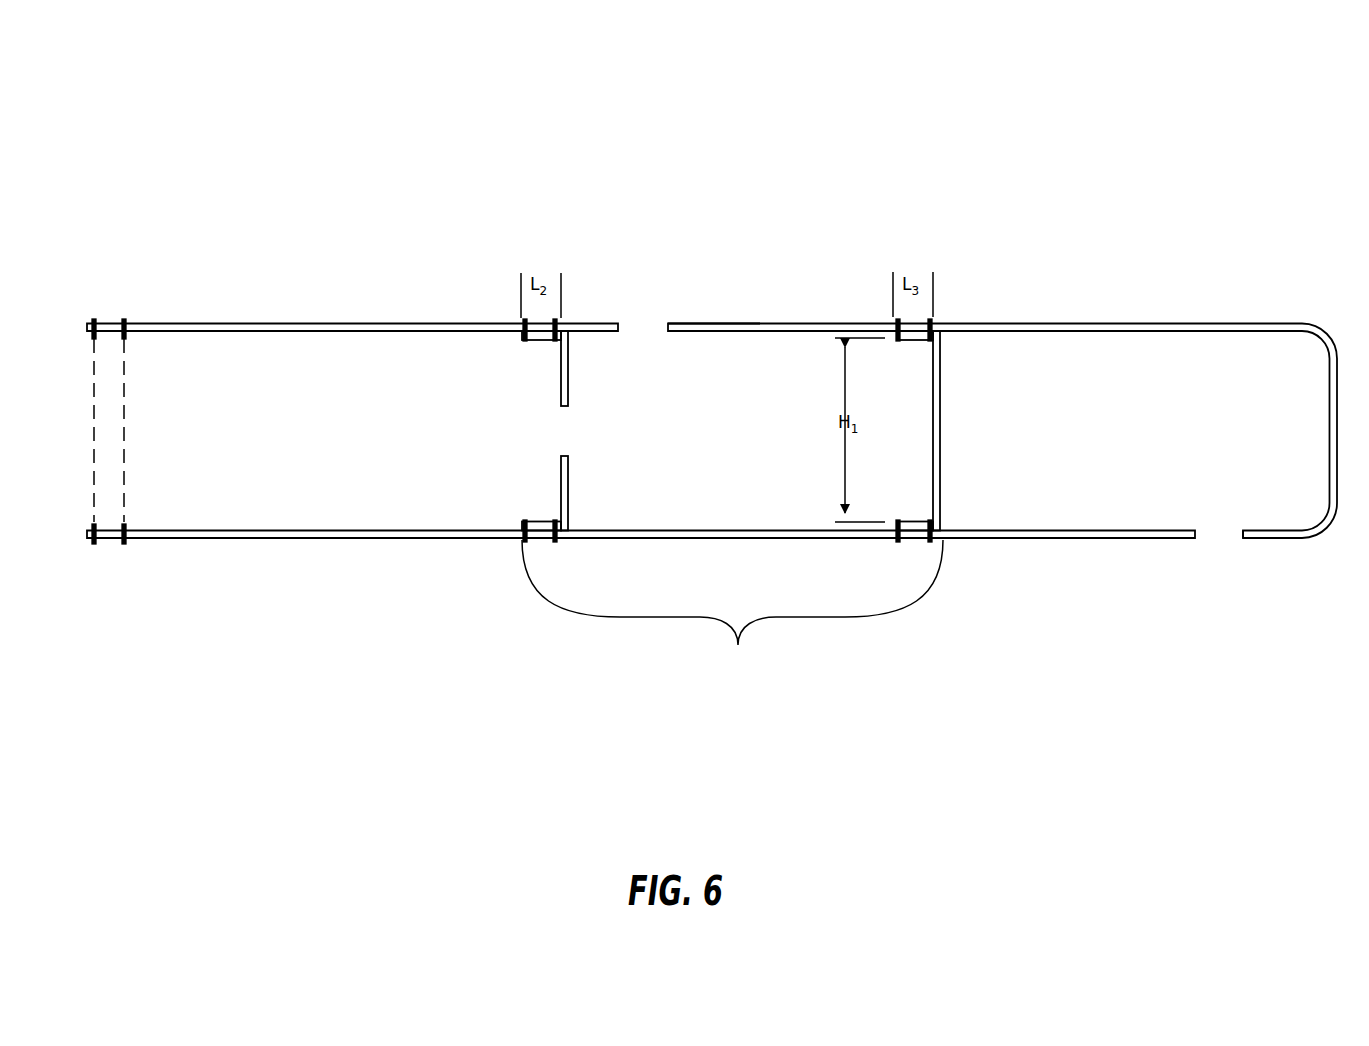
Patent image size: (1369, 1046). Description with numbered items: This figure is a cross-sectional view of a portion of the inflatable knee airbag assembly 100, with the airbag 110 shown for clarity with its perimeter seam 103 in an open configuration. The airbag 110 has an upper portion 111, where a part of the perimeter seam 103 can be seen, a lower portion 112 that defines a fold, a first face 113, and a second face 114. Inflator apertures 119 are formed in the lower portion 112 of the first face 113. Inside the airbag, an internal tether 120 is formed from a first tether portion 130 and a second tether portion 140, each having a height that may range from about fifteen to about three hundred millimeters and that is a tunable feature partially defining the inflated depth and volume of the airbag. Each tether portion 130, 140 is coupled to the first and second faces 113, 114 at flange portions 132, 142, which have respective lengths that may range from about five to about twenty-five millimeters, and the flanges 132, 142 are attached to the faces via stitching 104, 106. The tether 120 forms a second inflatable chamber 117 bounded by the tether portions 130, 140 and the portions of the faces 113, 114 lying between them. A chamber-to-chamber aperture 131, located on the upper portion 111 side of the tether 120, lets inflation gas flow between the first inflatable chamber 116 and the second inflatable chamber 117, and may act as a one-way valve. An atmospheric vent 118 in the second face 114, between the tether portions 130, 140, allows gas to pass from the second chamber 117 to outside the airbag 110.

The inflatable knee airbag assembly 100 is at (822, 150).
The perimeter seam 103 is at (124, 523).
The stitching 104 is at (524, 327).
The stitching 106 is at (897, 327).
The airbag 110 is at (1140, 330).
The upper portion 111 is at (133, 323).
The lower portion 112 is at (1333, 362).
The first face 113 is at (1105, 540).
The second face 114 is at (1210, 328).
The first inflatable chamber 116 is at (348, 386).
The second inflatable chamber 117 is at (781, 366).
The atmospheric vent 118 is at (643, 327).
The inflator apertures 119 is at (1220, 535).
The tether 120 is at (732, 610).
The first tether portion 130 is at (586, 350).
The chamber-to-chamber aperture 131 is at (560, 430).
The flange portions 132 is at (542, 340).
The second tether portion 140 is at (962, 390).
The flange portions 142 is at (920, 340).